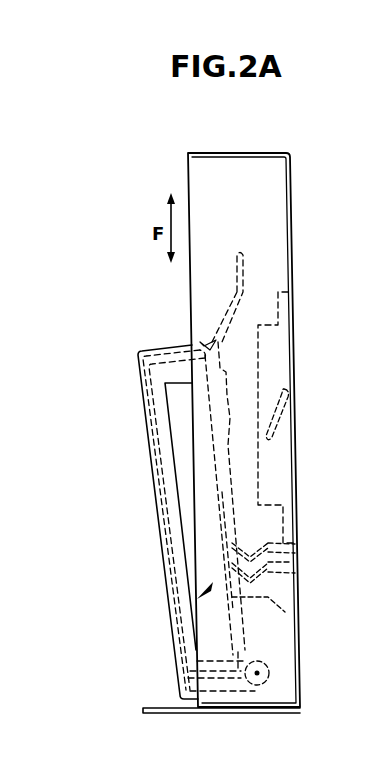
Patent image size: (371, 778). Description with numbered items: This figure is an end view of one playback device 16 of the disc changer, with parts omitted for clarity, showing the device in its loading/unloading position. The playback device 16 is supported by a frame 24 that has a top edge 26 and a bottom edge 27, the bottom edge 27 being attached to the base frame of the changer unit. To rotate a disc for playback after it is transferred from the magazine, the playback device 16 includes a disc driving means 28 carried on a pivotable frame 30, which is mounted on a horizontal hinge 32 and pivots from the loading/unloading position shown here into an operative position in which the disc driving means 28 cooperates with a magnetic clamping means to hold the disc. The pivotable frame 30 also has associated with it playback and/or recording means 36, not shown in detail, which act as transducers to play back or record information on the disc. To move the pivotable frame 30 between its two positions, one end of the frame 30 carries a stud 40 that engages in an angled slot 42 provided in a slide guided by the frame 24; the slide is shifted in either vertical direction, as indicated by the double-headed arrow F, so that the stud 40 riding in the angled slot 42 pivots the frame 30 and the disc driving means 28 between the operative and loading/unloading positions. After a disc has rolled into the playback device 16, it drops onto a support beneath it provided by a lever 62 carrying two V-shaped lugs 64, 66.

The playback device 16 is at (180, 522).
The frame 24 is at (292, 196).
The top edge 26 is at (226, 153).
The bottom edge 27 is at (227, 711).
The disc driving means 28 is at (227, 420).
The pivotable frame 30 is at (158, 500).
The horizontal hinge 32 is at (258, 704).
The playback and/or recording means 36 is at (182, 601).
The stud 40 is at (186, 338).
The angled slot 42 is at (213, 340).
The lever 62 is at (292, 616).
The V-shaped lug 64 is at (297, 548).
The V-shaped lug 66 is at (297, 575).